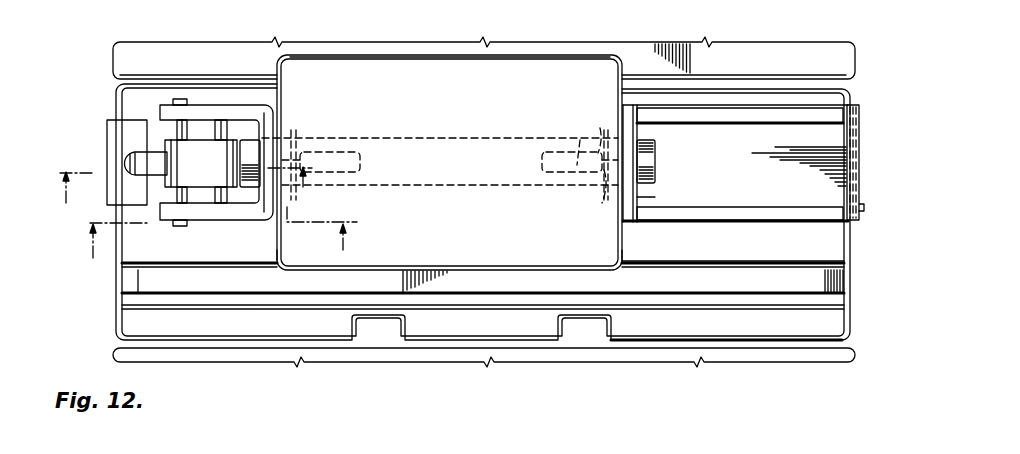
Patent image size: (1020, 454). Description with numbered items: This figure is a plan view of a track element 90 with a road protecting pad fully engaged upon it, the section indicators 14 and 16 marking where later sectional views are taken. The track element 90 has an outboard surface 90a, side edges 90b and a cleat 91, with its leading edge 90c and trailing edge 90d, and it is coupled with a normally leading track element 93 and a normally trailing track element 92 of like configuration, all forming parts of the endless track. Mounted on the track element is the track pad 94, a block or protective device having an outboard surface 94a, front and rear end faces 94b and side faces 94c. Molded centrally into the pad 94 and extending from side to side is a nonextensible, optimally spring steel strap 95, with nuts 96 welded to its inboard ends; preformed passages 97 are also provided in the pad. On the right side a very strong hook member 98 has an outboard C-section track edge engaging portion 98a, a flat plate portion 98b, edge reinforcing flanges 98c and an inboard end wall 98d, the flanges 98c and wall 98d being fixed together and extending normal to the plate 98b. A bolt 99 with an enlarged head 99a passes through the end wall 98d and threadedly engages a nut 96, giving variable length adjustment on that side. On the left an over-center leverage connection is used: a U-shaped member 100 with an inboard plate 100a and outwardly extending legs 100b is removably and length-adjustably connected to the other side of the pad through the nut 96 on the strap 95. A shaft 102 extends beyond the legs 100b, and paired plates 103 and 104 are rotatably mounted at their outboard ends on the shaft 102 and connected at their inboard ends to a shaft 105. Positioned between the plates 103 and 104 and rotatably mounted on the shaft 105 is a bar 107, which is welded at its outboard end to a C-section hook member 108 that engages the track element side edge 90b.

The track element 90 is at (829, 82).
The outboard surface 90a is at (786, 268).
The side edges 90b is at (115, 281).
The leading edge 90c is at (752, 82).
The trailing edge 90d is at (648, 340).
The cleat 91 is at (719, 256).
The trailing track element 92 is at (825, 360).
The leading track element 93 is at (776, 56).
The track pad 94 is at (394, 68).
The outboard surface 94a is at (537, 73).
The end faces 94b is at (463, 56).
The side faces 94c is at (271, 252).
The strap 95 is at (463, 127).
The nuts 96 is at (297, 135).
The preformed passages 97 is at (362, 159).
The hook member 98 is at (868, 207).
The C-section track edge engaging portion 98a is at (862, 163).
The flat plate portion 98b is at (778, 169).
The edge reinforcing flanges 98c is at (785, 117).
The inboard end wall 98d is at (637, 197).
The bolt 99 is at (578, 153).
The enlarged head 99a is at (655, 149).
The U-shaped member 100 is at (262, 105).
The inboard plate 100a is at (270, 120).
The outwardly extending legs 100b is at (183, 100).
The shaft 102 is at (170, 134).
The plate 103 is at (196, 128).
The plate 104 is at (192, 204).
The shaft 105 is at (232, 188).
The bar 107 is at (137, 178).
The C-section hook member 108 is at (107, 129).
The section line 14 is at (196, 177).
The section line 16 is at (218, 232).